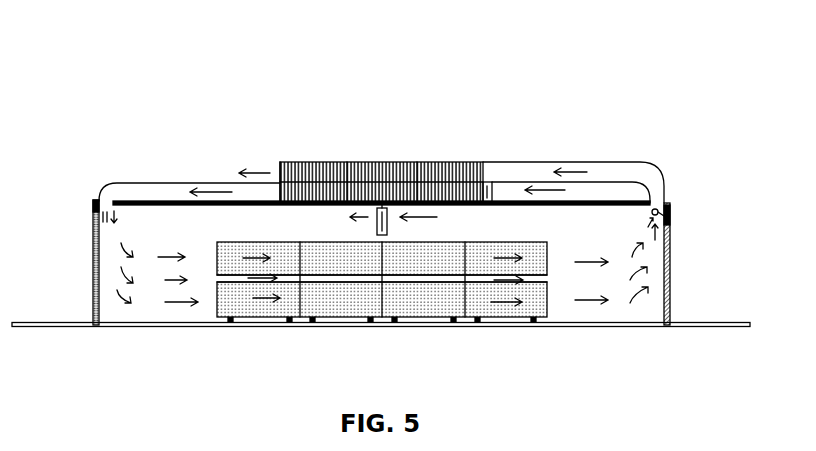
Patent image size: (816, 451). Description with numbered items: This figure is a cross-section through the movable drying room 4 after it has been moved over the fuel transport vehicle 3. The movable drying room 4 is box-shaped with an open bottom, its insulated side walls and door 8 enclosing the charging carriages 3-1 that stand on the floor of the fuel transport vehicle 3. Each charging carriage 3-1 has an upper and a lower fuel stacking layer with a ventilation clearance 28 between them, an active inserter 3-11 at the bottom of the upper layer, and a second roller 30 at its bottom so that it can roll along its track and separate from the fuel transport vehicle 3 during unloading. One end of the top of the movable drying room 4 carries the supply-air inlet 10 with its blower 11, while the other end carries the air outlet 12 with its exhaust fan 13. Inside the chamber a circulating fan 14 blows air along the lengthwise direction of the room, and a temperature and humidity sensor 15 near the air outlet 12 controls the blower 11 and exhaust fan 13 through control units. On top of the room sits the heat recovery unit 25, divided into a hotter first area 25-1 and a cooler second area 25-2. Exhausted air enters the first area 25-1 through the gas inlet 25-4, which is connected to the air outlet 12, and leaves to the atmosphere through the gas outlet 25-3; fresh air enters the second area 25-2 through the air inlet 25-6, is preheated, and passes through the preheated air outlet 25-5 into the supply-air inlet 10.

The fuel transport vehicle 3 is at (633, 323).
The charging carriage 3-1 is at (350, 300).
The active inserter 3-11 is at (368, 276).
The movable drying room 4 is at (95, 300).
The door 8 is at (668, 305).
The supply-air inlet 10 is at (98, 200).
The blower 11 is at (493, 196).
The air outlet 12 is at (660, 203).
The exhaust fan 13 is at (657, 212).
The circulating fan 14 is at (387, 220).
The temperature and humidity sensor 15 is at (666, 220).
The heat recovery unit 25 is at (318, 162).
The first area 25-1 is at (347, 162).
The second area 25-2 is at (417, 163).
The gas outlet 25-3 is at (280, 163).
The gas inlet 25-4 is at (485, 163).
The preheated air outlet 25-5 is at (280, 196).
The air inlet 25-6 is at (489, 192).
The ventilation clearance 28 is at (237, 279).
The second roller 30 is at (477, 322).